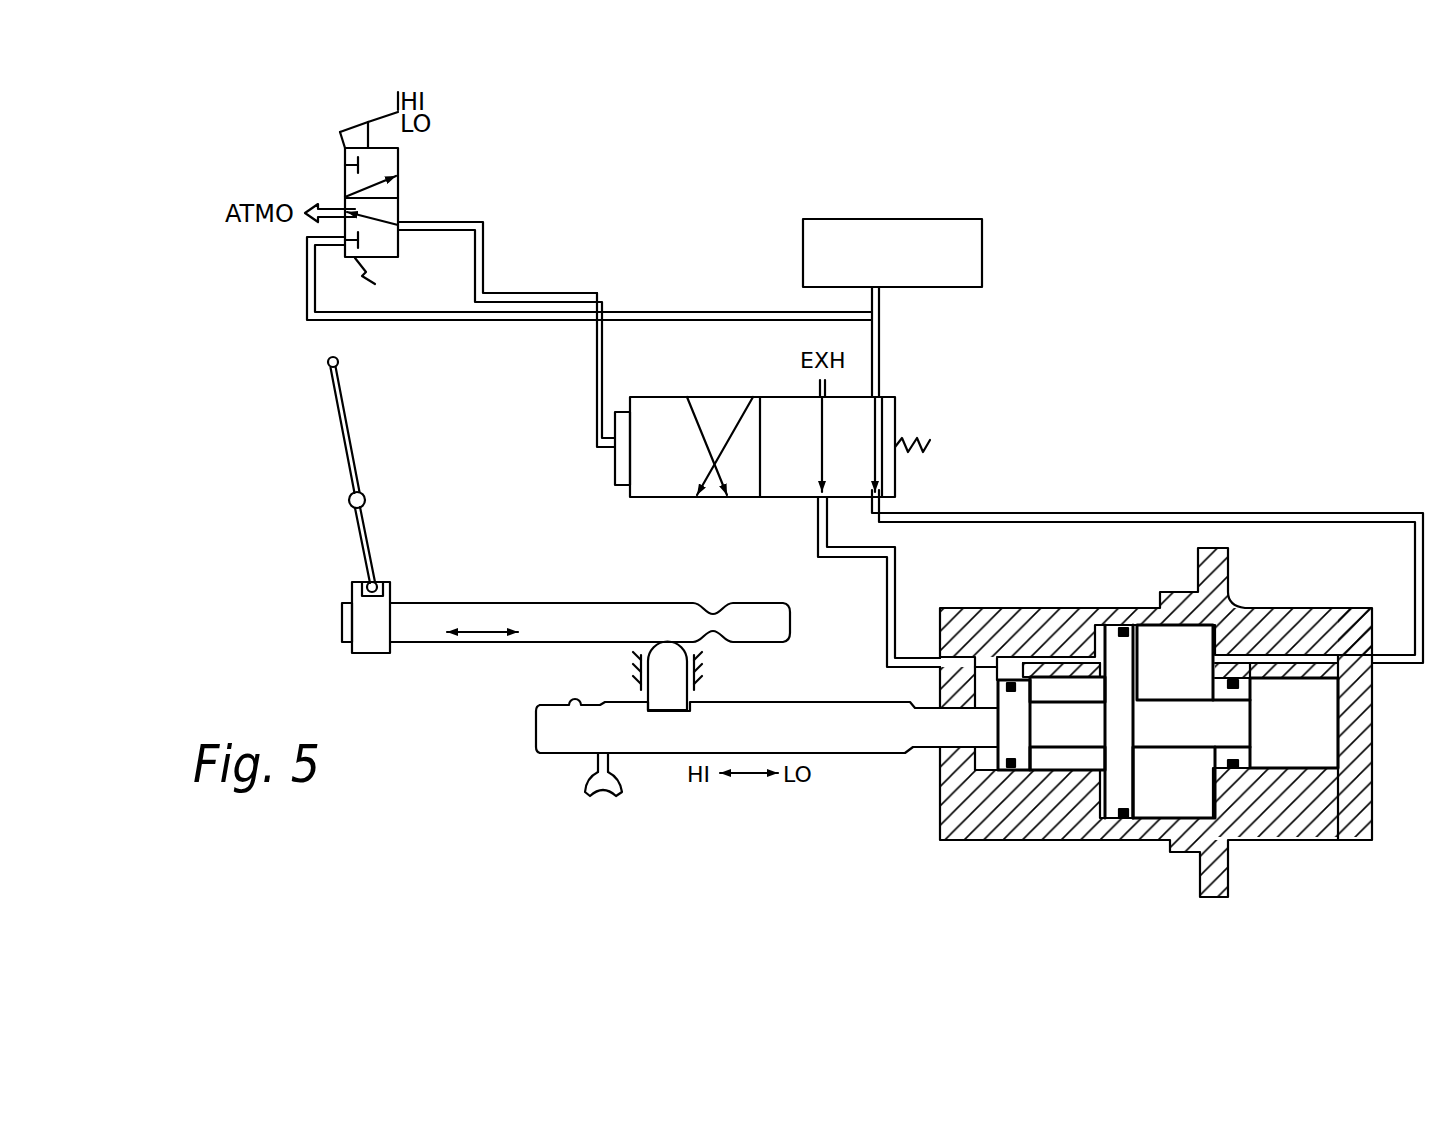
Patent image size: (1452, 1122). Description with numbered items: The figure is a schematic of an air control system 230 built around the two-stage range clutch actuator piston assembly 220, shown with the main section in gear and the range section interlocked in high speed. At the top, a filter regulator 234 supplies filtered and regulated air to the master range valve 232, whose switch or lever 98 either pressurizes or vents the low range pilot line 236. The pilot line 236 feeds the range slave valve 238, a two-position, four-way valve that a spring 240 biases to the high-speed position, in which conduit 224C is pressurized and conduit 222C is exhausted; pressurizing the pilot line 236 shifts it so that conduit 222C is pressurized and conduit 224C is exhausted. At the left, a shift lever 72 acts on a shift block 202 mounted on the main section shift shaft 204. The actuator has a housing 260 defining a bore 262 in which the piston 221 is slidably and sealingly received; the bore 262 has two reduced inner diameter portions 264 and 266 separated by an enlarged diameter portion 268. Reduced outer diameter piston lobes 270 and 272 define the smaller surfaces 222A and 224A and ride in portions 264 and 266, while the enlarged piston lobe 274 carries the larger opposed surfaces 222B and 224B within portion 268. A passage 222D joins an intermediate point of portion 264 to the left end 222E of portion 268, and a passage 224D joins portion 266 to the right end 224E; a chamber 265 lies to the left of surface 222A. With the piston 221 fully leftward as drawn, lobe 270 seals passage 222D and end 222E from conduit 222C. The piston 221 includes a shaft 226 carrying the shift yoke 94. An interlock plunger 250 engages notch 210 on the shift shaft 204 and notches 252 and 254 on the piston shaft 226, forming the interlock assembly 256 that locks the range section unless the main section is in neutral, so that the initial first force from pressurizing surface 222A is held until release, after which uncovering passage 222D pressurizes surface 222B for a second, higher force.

The control system 230 is at (224, 265).
The switch or lever 98 is at (340, 137).
The master range valve 232 is at (400, 179).
The filter regulator 234 is at (965, 218).
The pilot line 236 is at (582, 290).
The range slave valve 238 is at (733, 395).
The spring 240 is at (905, 437).
The two-stage range clutch actuator piston assembly 220 is at (1298, 497).
The conduit 224C is at (1008, 513).
The shift lever 72 is at (350, 410).
The shift block 202 is at (373, 617).
The shift shaft 204 is at (488, 610).
The interlock assembly 256 is at (675, 623).
The interlock notch 210 is at (720, 633).
The conduit 222C is at (812, 522).
The passage 222D is at (1045, 653).
The enlarged outer diameter piston lobe 274 is at (1125, 665).
The housing 260 is at (1212, 590).
The piston 221 is at (1253, 652).
The passage 224D is at (1262, 653).
The chamber 265 is at (987, 690).
The interlock plunger 250 is at (666, 663).
The interlock notch 252 is at (680, 720).
The shaft 226 is at (805, 720).
The left end of enlarged bore portion 222E is at (1058, 692).
The right end of enlarged bore portion 224E is at (1155, 690).
The piston lobe 272 is at (1240, 703).
The surface area 224A is at (1250, 735).
The surface area 224B is at (1193, 808).
The interlock notch 254 is at (582, 708).
The shift yoke 94 is at (608, 762).
The piston lobe 270 is at (1010, 762).
The surface area 222A is at (940, 773).
The reduced inner diameter portion 264 is at (1047, 762).
The surface area 222B is at (1060, 770).
The enlarged diameter portion 268 is at (1198, 825).
The reduced inner diameter portion 266 is at (1283, 760).
The bore 262 is at (1317, 770).